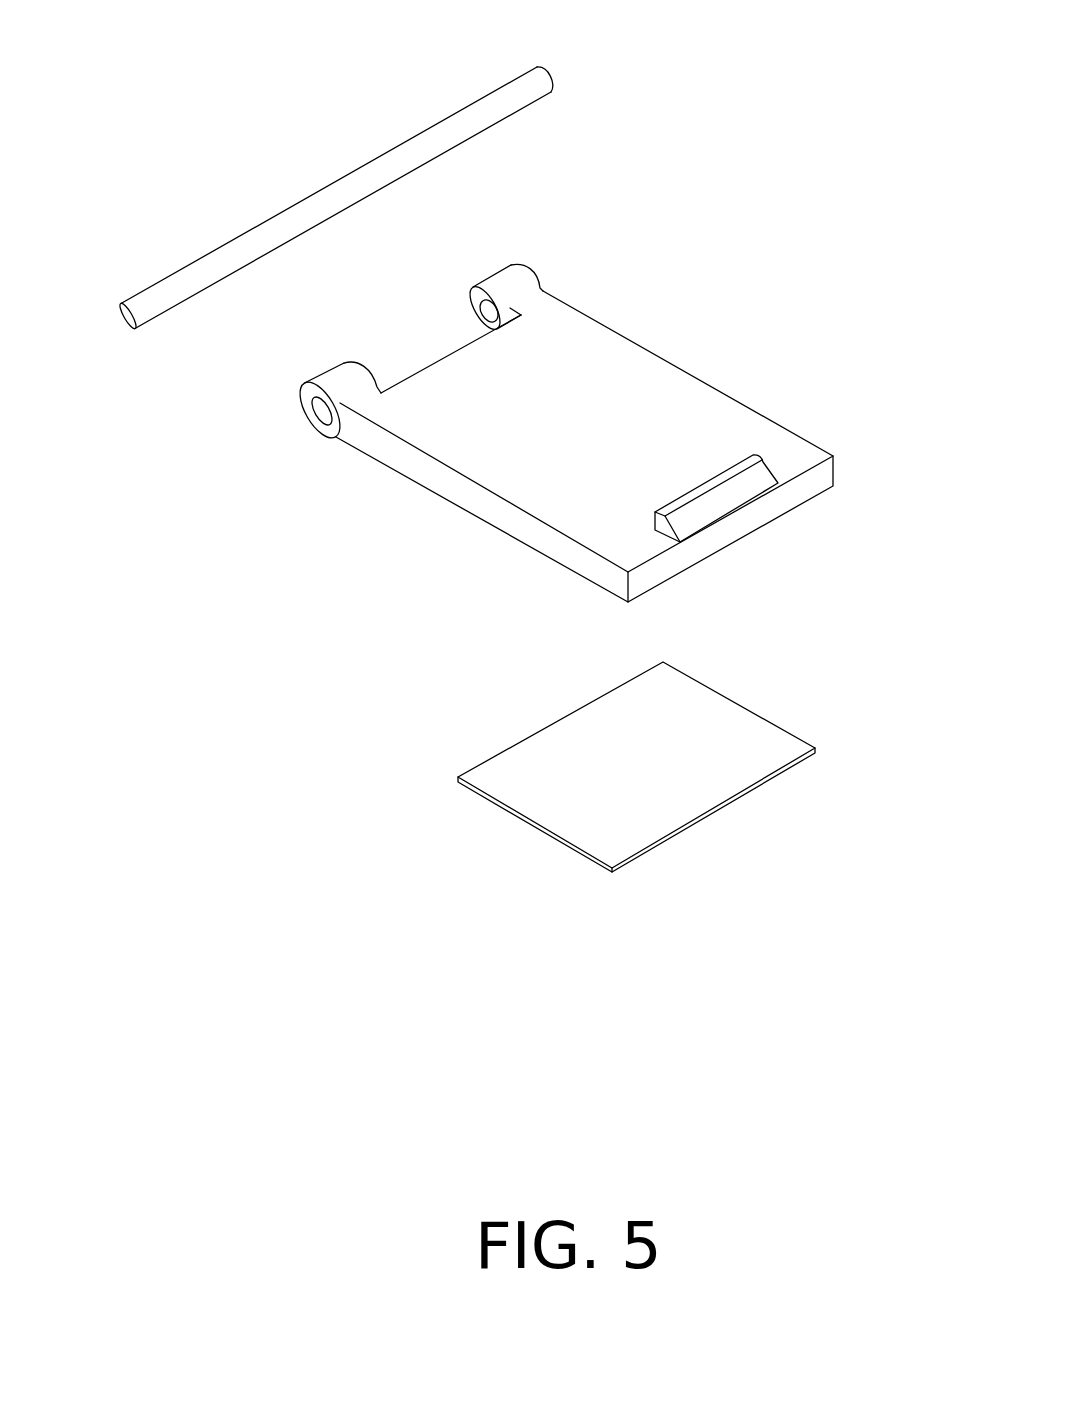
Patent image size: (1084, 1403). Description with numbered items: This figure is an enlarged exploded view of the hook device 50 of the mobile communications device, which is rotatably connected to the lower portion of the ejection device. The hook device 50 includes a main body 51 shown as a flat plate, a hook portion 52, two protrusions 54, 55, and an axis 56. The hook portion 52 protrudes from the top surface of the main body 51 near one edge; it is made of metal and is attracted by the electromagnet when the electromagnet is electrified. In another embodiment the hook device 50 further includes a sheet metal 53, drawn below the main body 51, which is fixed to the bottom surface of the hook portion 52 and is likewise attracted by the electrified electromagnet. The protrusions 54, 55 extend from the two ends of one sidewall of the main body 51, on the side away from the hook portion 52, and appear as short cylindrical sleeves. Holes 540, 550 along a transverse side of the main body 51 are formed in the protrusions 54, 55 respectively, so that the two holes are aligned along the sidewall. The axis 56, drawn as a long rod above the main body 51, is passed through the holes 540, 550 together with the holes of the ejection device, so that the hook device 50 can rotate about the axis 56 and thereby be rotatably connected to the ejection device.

The hook device 50 is at (245, 62).
The main body 51 is at (680, 403).
The hook portion 52 is at (740, 485).
The sheet metal 53 is at (710, 733).
The protrusion 54 is at (511, 278).
The hole 540 is at (490, 307).
The protrusion 55 is at (345, 377).
The hole 550 is at (323, 410).
The axis 56 is at (448, 132).